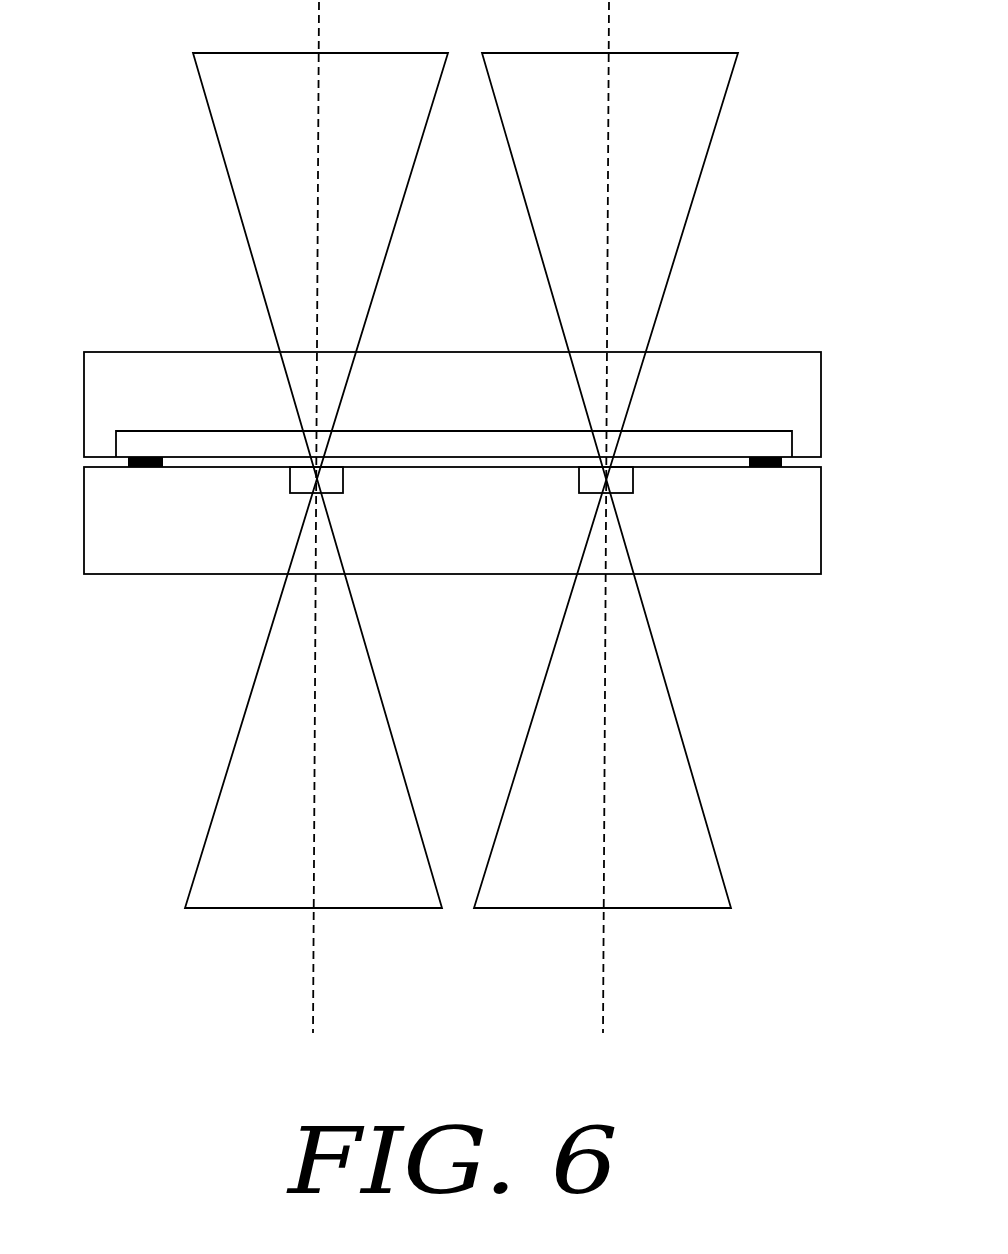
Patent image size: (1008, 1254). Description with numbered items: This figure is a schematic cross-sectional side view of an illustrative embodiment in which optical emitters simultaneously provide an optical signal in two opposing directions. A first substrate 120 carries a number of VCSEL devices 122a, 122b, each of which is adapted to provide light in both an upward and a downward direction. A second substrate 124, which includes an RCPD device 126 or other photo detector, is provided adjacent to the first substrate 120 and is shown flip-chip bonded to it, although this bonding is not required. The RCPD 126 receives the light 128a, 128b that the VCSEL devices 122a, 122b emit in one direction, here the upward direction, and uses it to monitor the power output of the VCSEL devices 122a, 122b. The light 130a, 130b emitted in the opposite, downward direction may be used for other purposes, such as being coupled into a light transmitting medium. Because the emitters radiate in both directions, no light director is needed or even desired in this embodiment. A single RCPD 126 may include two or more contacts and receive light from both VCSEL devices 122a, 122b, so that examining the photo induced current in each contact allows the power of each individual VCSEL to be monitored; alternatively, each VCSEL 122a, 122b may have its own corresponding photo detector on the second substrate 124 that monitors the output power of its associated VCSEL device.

The first substrate 120 is at (785, 548).
The VCSEL device 122a is at (334, 478).
The VCSEL device 122b is at (627, 473).
The second substrate 124 is at (737, 377).
The RCPD device 126 is at (188, 442).
The light 128a is at (240, 160).
The light 128b is at (682, 177).
The light 130a is at (243, 825).
The light 130b is at (672, 825).